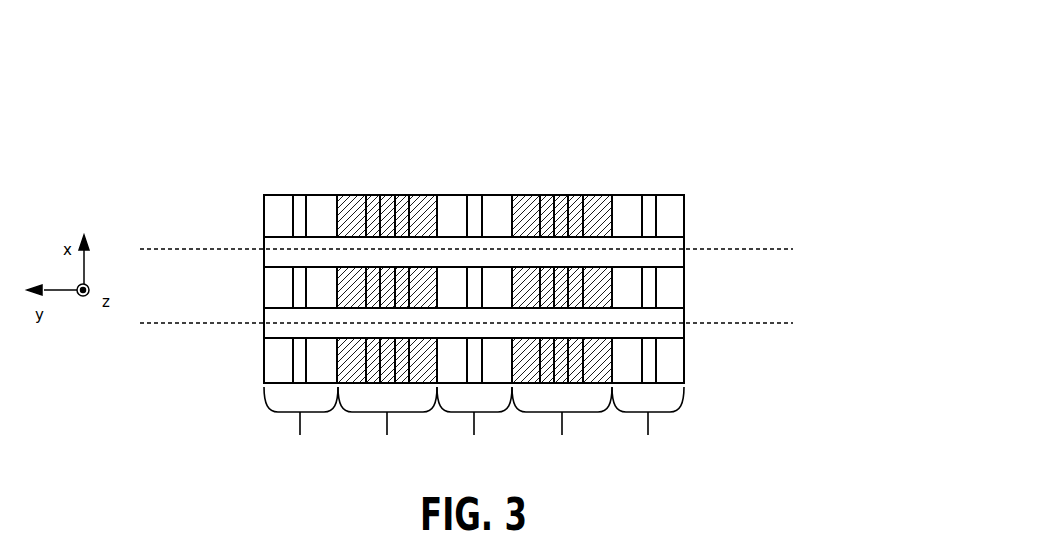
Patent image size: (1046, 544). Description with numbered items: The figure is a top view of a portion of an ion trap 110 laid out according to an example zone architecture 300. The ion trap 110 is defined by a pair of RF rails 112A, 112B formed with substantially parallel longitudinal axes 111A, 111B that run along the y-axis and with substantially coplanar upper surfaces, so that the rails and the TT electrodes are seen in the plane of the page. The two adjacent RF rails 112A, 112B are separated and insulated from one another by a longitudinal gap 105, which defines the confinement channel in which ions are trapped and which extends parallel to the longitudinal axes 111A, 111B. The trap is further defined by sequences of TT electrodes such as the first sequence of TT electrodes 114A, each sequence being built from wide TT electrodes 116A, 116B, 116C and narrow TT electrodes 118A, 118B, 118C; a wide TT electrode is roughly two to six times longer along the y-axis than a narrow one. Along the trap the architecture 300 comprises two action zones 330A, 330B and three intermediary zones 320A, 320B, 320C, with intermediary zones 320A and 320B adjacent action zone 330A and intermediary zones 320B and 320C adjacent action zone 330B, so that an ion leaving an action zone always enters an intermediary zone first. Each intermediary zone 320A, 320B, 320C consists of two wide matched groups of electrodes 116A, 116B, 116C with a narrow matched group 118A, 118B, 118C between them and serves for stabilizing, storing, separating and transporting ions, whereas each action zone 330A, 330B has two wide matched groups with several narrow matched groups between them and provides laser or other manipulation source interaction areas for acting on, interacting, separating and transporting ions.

The zone architecture 300 is at (665, 98).
The ion trap 110 is at (682, 145).
The longitudinal gap 105 is at (720, 288).
The longitudinal axis 111A is at (778, 252).
The longitudinal axis 111B is at (778, 325).
The RF rail 112A is at (671, 246).
The RF rail 112B is at (663, 318).
The first sequence of TT electrodes 114A is at (677, 215).
The wide TT electrode 116A is at (272, 217).
The wide TT electrode 116B is at (275, 274).
The wide TT electrode 116C is at (288, 362).
The narrow TT electrode 118A is at (300, 202).
The narrow TT electrode 118B is at (297, 299).
The narrow TT electrode 118C is at (302, 377).
The intermediary zone 320A is at (301, 425).
The intermediary zone 320B is at (474, 425).
The intermediary zone 320C is at (648, 425).
The action zone 330A is at (387, 329).
The action zone 330B is at (562, 329).